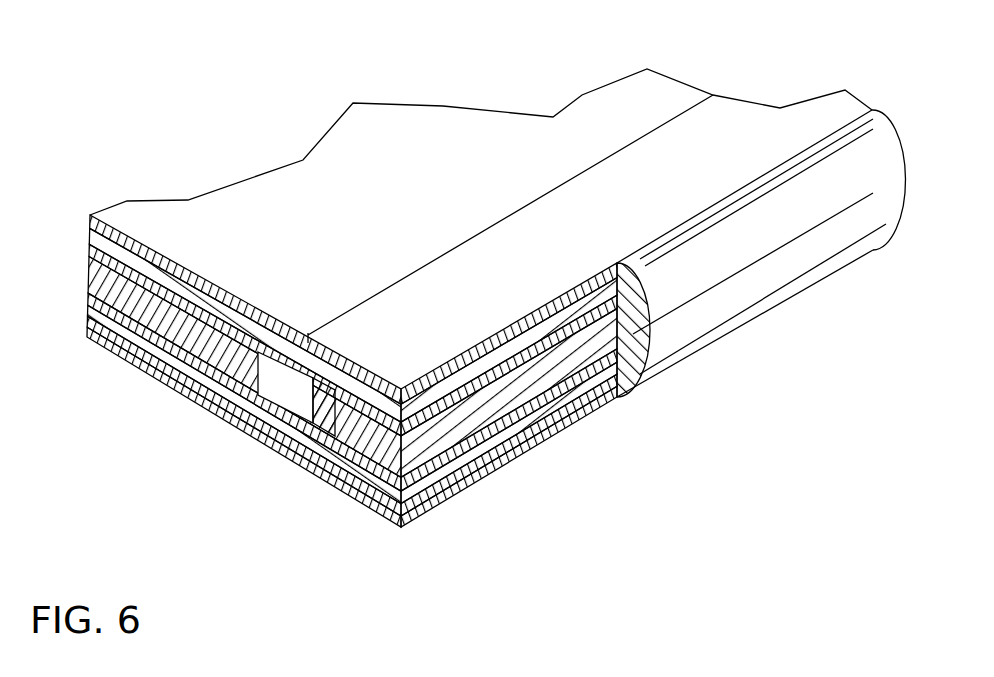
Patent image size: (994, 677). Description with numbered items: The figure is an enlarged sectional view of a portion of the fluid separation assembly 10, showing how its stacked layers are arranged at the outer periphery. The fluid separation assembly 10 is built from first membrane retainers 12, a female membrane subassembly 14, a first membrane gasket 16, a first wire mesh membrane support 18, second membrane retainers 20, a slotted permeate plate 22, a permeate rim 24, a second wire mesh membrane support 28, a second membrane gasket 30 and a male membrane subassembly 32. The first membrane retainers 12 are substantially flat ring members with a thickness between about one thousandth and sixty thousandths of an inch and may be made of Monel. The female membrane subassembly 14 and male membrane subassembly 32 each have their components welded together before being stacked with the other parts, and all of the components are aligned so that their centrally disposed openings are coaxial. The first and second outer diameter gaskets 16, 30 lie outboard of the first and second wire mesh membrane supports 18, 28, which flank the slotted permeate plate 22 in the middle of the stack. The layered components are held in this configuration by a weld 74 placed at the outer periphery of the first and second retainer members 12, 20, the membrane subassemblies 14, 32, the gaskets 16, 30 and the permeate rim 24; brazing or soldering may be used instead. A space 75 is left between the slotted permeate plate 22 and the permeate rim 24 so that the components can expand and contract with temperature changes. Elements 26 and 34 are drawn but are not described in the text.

The fluid separation assembly 10 is at (245, 105).
The first membrane retainers 12 is at (478, 327).
The female membrane subassembly 14 is at (130, 232).
The first membrane gasket 16 is at (285, 335).
The first wire mesh membrane support 18 is at (152, 272).
The second membrane retainers 20 is at (328, 372).
The slotted permeate plate 22 is at (205, 340).
The permeate rim 24 is at (330, 423).
The lower intermediate layer 26 is at (295, 430).
The second wire mesh membrane support 28 is at (162, 355).
The second membrane gasket 30 is at (354, 487).
The male membrane subassembly 32 is at (127, 358).
The bottom edge 34 is at (392, 528).
The weld 74 is at (692, 350).
The space 75 is at (267, 390).